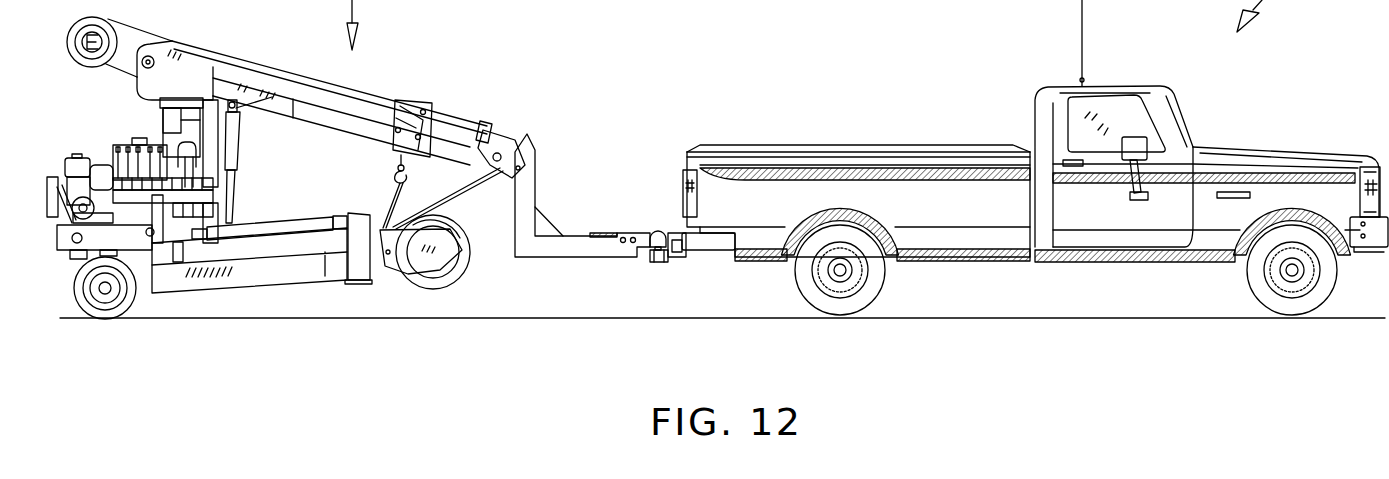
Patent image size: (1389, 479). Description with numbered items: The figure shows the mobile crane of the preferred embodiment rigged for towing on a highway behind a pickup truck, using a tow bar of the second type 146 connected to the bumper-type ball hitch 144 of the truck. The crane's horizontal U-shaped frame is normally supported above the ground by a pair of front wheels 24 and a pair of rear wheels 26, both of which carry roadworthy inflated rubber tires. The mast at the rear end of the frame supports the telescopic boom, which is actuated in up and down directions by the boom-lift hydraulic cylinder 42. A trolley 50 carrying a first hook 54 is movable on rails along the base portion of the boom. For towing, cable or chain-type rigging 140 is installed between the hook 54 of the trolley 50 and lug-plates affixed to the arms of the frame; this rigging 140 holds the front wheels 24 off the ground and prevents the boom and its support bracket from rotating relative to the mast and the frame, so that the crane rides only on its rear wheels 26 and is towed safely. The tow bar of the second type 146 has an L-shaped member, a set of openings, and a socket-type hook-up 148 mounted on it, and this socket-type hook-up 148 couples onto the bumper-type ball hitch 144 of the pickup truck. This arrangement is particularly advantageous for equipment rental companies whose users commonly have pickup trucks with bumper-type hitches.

The front wheels 24 is at (467, 277).
The rear wheels 26 is at (121, 311).
The boom-lift hydraulic cylinder 42 is at (237, 146).
The trolley 50 is at (413, 102).
The first hook 54 is at (392, 173).
The cable or chain-type rigging 140 is at (388, 204).
The bumper-type ball hitch 144 is at (658, 263).
The tow bar of the second type 146 is at (540, 197).
The socket-type hook-up 148 is at (657, 236).